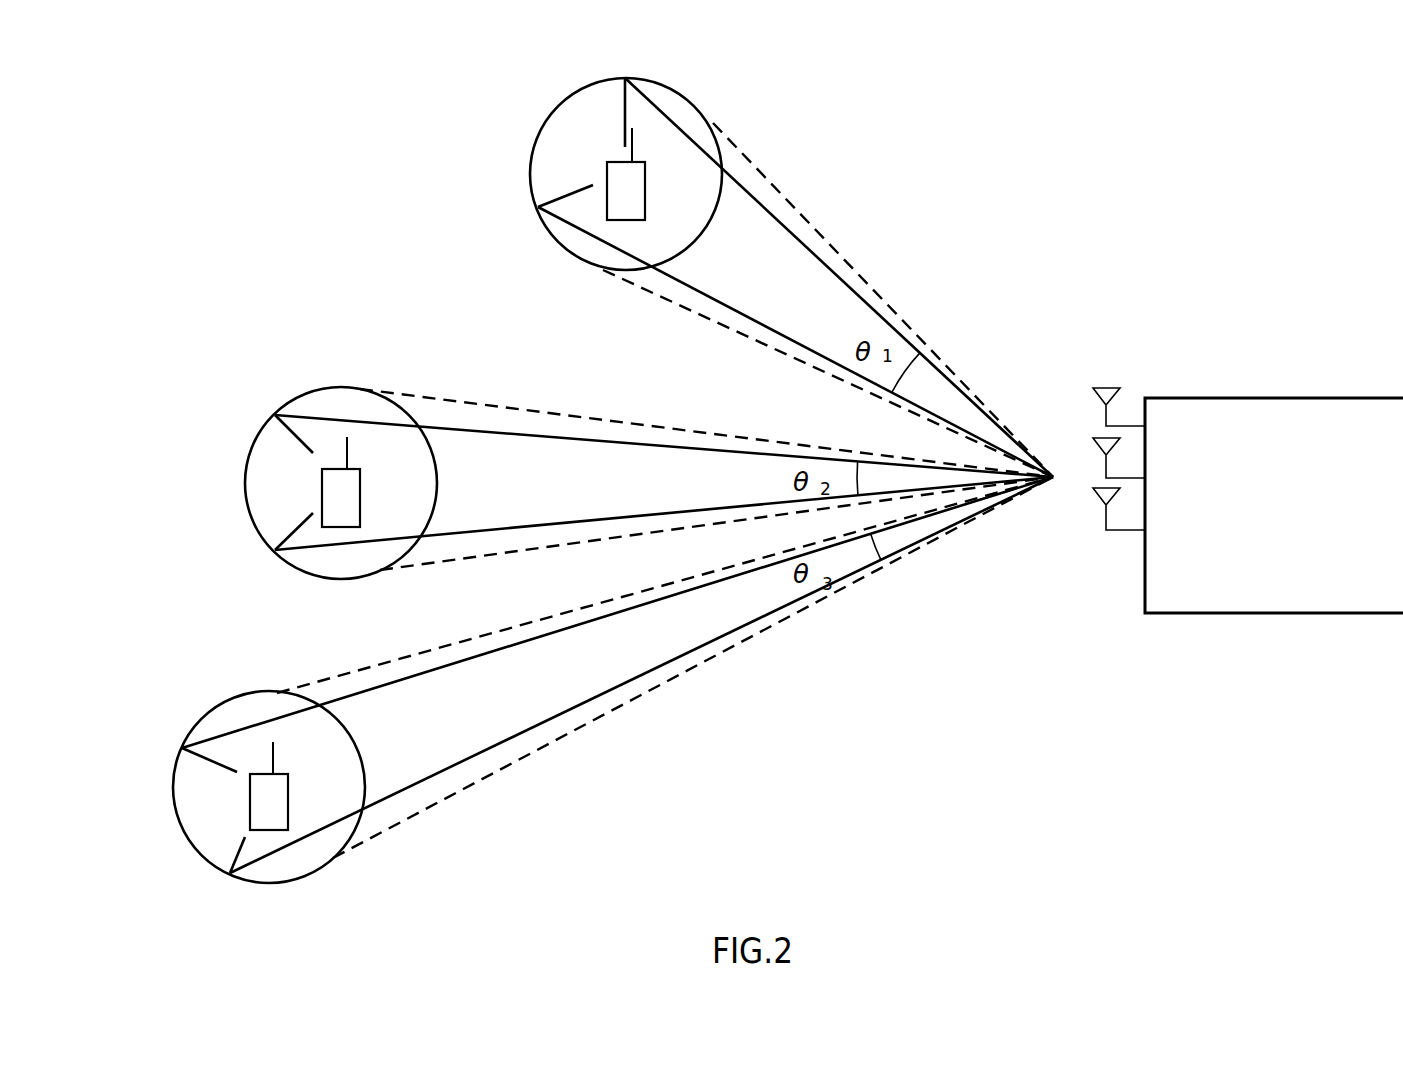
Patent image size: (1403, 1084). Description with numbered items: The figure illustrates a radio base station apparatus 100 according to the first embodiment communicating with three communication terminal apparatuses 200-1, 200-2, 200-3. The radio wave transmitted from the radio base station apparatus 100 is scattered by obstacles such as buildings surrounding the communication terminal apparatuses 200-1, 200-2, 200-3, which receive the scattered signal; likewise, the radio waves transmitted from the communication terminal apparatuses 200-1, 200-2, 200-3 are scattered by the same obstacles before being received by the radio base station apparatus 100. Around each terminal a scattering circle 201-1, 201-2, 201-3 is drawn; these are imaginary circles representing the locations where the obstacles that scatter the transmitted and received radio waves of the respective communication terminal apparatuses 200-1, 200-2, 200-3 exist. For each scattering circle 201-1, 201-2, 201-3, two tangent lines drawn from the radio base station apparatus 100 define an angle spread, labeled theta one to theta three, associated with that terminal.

The radio base station apparatus 100 is at (1363, 383).
The communication terminal apparatus 200-1 is at (610, 162).
The communication terminal apparatus 200-2 is at (322, 487).
The communication terminal apparatus 200-3 is at (250, 808).
The scattering circle 201-1 is at (738, 73).
The scattering circle 201-2 is at (367, 361).
The scattering circle 201-3 is at (412, 739).